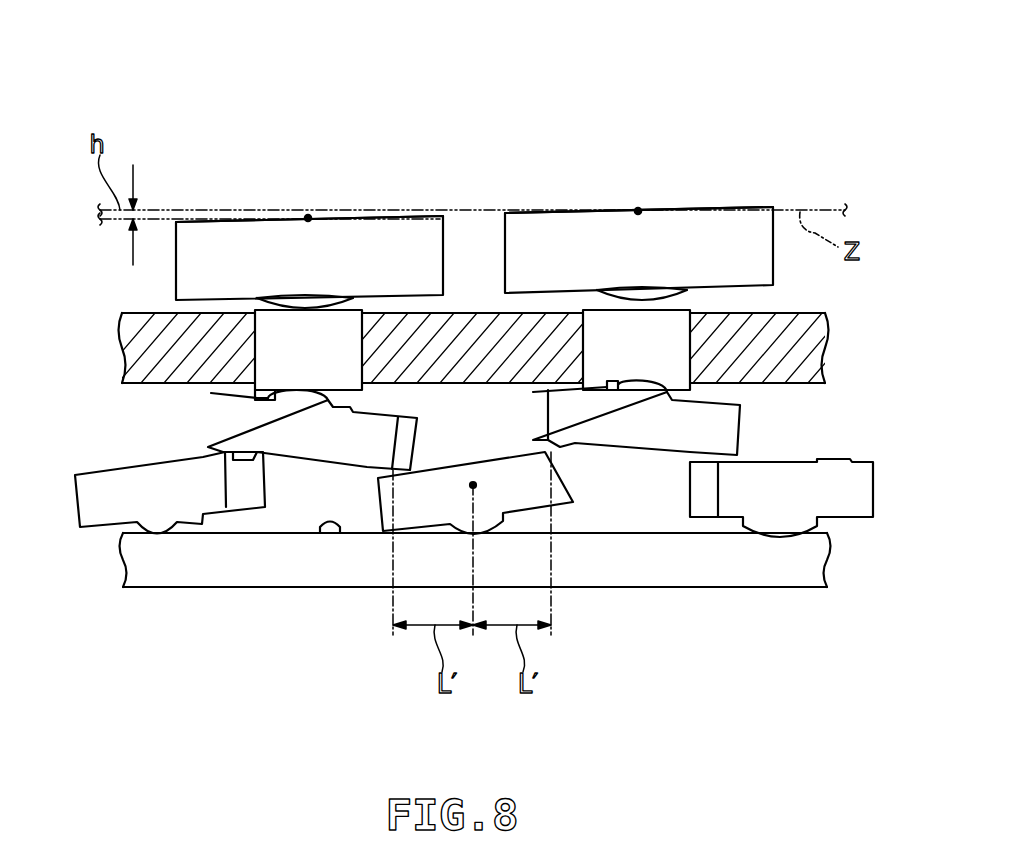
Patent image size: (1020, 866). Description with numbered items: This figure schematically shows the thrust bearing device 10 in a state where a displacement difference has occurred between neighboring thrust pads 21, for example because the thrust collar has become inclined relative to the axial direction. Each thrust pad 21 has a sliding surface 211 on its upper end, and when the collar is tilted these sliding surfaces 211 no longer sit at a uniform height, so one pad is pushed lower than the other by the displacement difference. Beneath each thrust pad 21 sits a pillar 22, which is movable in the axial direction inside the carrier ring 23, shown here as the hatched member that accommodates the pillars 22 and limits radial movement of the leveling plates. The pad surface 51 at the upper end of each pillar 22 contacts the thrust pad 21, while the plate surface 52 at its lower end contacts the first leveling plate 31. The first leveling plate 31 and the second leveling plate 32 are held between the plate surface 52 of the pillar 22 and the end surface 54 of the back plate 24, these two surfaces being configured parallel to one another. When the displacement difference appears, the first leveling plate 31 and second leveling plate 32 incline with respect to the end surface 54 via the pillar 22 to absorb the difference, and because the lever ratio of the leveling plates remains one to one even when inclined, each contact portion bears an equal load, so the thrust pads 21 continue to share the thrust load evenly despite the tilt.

The thrust bearing device 10 is at (722, 108).
The thrust pad 21 is at (342, 233).
The sliding surface 211 is at (212, 221).
The pillar 22 is at (268, 355).
The carrier ring 23 is at (155, 311).
The back plate 24 is at (157, 562).
The first leveling plate 31 is at (206, 430).
The second leveling plate 32 is at (473, 462).
The pad surface 51 is at (257, 298).
The plate surface 52 is at (268, 396).
The end surface 54 is at (342, 533).